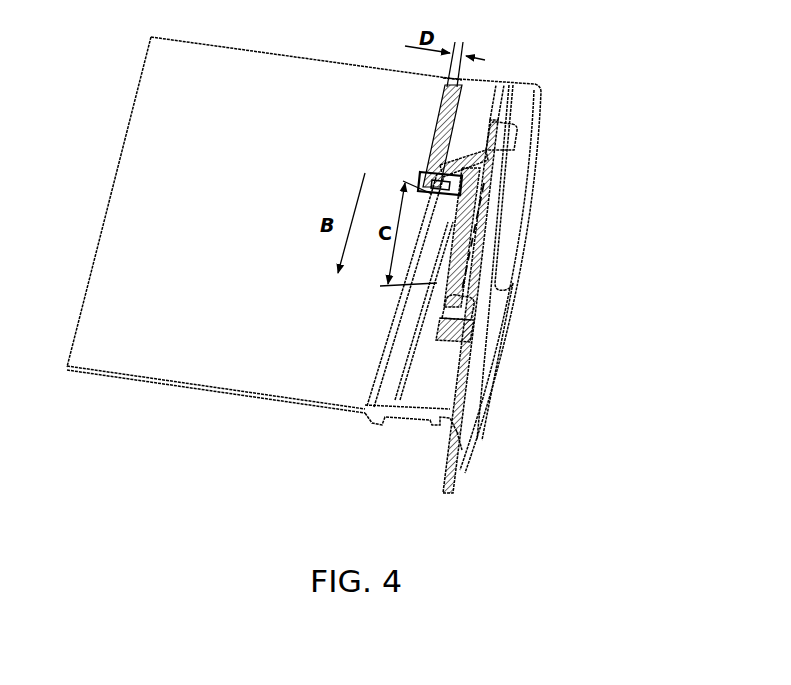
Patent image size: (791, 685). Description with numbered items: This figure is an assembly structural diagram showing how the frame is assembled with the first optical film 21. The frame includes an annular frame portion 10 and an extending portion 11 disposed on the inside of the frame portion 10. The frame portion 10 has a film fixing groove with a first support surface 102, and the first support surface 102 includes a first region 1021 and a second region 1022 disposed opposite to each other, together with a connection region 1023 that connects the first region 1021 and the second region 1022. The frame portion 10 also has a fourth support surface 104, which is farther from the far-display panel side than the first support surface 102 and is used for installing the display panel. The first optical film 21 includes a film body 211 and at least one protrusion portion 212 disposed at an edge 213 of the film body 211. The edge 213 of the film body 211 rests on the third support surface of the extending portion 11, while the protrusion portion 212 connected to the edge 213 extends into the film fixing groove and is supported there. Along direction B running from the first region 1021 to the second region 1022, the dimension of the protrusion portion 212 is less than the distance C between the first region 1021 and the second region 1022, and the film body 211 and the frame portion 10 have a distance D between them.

The frame portion 10 is at (525, 85).
The extending portion 11 is at (363, 413).
The first support surface 102 is at (534, 232).
The first region 1021 is at (453, 170).
The second region 1022 is at (505, 303).
The connection region 1023 is at (460, 242).
The fourth support surface 104 is at (480, 80).
The first optical film 21 is at (273, 273).
The film body 211 is at (197, 385).
The protrusion portion 212 is at (423, 253).
The edge 213 is at (421, 172).